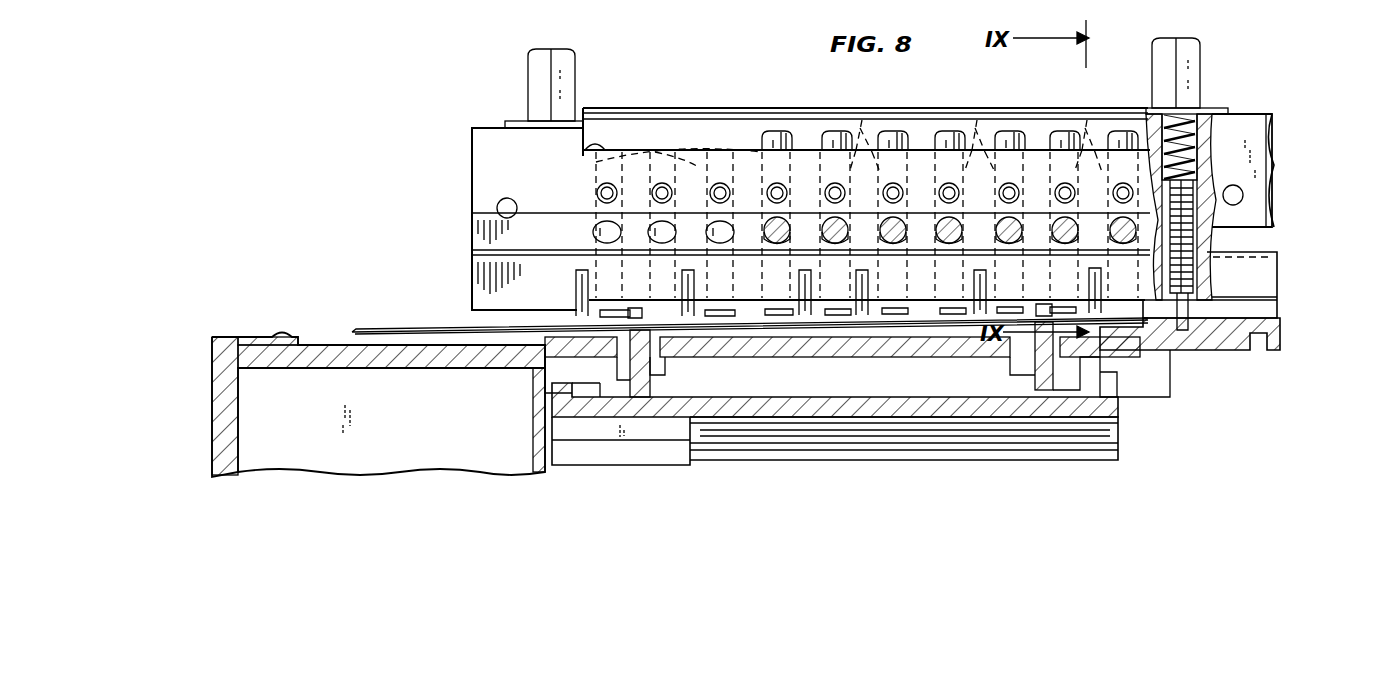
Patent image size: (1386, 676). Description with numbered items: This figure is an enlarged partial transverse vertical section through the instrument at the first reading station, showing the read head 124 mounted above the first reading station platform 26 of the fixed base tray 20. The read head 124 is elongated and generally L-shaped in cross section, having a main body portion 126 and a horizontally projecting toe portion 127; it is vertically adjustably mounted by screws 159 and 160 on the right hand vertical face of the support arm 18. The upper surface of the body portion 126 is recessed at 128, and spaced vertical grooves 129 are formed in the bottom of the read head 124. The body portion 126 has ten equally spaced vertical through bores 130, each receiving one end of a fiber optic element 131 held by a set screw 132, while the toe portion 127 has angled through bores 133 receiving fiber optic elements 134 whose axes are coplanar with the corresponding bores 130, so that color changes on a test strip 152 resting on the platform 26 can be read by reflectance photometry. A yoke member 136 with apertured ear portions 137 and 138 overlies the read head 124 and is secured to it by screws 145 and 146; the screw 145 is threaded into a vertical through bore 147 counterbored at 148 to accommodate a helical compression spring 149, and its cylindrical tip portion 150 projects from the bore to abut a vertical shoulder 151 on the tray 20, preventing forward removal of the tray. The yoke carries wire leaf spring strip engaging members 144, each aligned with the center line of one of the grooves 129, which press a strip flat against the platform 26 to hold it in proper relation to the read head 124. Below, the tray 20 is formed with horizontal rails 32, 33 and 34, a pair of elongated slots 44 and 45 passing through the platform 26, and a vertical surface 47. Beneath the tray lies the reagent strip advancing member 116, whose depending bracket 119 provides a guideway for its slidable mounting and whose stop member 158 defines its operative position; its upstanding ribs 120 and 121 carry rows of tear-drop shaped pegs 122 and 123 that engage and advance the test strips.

The support arm 18 is at (612, 130).
The fixed base tray 20 is at (255, 337).
The first reading station platform 26 is at (552, 340).
The horizontal rail 32 is at (1120, 360).
The horizontal rail 33 is at (570, 355).
The horizontal rail 34 is at (856, 335).
The elongated slot 44 is at (1033, 368).
The elongated slot 45 is at (655, 372).
The vertical surface 47 is at (1135, 300).
The reagent strip advancing member 116 is at (1118, 408).
The depending bracket 119 is at (740, 455).
The upstanding rib 120 is at (1053, 366).
The upstanding rib 121 is at (630, 373).
The test strip engaging peg 122 is at (1042, 304).
The test strip engaging peg 123 is at (636, 308).
The read head 124 is at (472, 150).
The main body portion 126 is at (482, 185).
The toe portion 127 is at (472, 264).
The recess 128 is at (586, 150).
The vertical groove 129 is at (576, 290).
The vertical through bore 130 is at (660, 156).
The fiber optic element 131 is at (792, 138).
The set screw 132 is at (822, 190).
The angled through bore 133 is at (594, 240).
The fiber optic element 134 is at (822, 225).
The yoke member 136 is at (683, 108).
The apertured ear portion 137 is at (1222, 108).
The apertured ear portion 138 is at (515, 121).
The strip engaging member 144 is at (580, 272).
The screw 145 is at (1200, 54).
The screw 146 is at (575, 72).
The vertical through bore 147 is at (1245, 268).
The counterbore 148 is at (1200, 165).
The helical compression spring 149 is at (1196, 186).
The cylindrical tip portion 150 is at (1195, 326).
The vertical shoulder 151 is at (1243, 326).
The reagent test strip 152 is at (424, 330).
The stop member 158 is at (612, 440).
The screw 159 is at (497, 208).
The screw 160 is at (1243, 196).